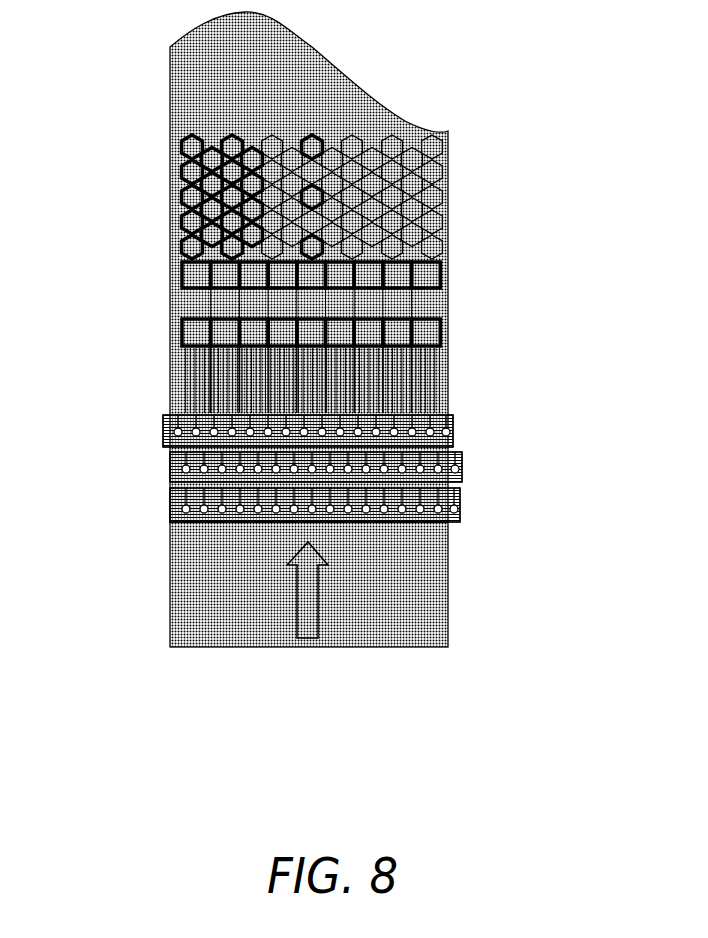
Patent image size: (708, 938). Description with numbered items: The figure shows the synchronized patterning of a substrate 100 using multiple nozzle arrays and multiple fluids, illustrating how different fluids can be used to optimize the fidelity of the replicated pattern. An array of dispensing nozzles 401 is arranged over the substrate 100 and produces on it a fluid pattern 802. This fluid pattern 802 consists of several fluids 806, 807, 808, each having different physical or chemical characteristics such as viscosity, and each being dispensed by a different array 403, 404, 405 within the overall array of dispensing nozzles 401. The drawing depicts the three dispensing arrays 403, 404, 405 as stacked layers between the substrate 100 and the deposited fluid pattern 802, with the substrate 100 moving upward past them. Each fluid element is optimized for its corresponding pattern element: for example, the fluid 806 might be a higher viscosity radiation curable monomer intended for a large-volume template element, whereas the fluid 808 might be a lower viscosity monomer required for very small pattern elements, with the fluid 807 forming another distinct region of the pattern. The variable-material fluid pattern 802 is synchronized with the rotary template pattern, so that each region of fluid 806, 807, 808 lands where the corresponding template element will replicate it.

The substrate 100 is at (455, 585).
The array of dispensing nozzles 401 is at (462, 430).
The dispensing nozzle array 403 is at (169, 510).
The dispensing nozzle array 404 is at (162, 467).
The dispensing nozzle array 405 is at (156, 434).
The fluid pattern 802 is at (460, 318).
The fluid 806 is at (324, 247).
The fluid 807 is at (176, 206).
The fluid 808 is at (446, 178).